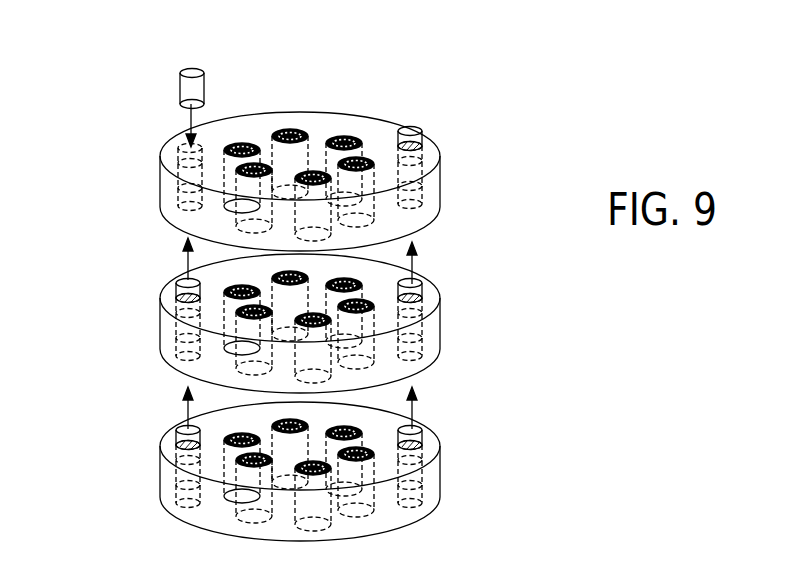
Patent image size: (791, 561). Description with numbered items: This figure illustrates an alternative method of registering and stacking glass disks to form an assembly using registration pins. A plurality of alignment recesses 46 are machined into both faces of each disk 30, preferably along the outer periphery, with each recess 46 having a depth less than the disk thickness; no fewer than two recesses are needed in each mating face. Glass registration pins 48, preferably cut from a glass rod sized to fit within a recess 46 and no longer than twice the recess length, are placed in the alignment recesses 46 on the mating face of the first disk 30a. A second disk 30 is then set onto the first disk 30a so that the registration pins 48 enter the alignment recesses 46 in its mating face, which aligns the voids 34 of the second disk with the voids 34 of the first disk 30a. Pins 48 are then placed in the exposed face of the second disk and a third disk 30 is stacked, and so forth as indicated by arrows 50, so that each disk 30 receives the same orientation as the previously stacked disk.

The disk 30 is at (158, 182).
The first disk 30a is at (443, 468).
The voids 34 is at (337, 0).
The alignment recess 46 is at (185, 365).
The registration pin 48 is at (178, 96).
The arrows 50 is at (180, 265).